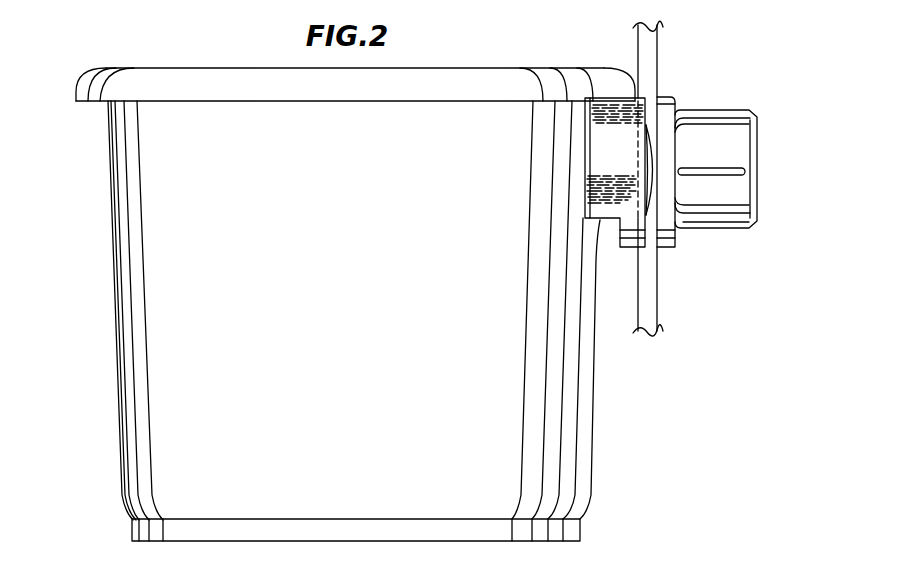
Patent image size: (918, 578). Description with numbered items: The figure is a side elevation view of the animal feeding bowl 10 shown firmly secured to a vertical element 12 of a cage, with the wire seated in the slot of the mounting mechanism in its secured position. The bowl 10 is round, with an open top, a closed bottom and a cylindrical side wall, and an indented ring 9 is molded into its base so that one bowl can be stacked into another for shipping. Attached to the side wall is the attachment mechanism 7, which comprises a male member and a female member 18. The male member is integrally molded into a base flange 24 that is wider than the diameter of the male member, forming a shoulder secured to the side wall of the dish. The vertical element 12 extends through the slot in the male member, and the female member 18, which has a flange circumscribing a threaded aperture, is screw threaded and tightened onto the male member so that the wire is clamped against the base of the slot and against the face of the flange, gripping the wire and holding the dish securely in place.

The attachment mechanism 7 is at (705, 241).
The indented ring 9 is at (153, 530).
The animal feeding bowl 10 is at (92, 243).
The vertical element 12 is at (658, 48).
The female member 18 is at (757, 197).
The base flange 24 is at (610, 195).